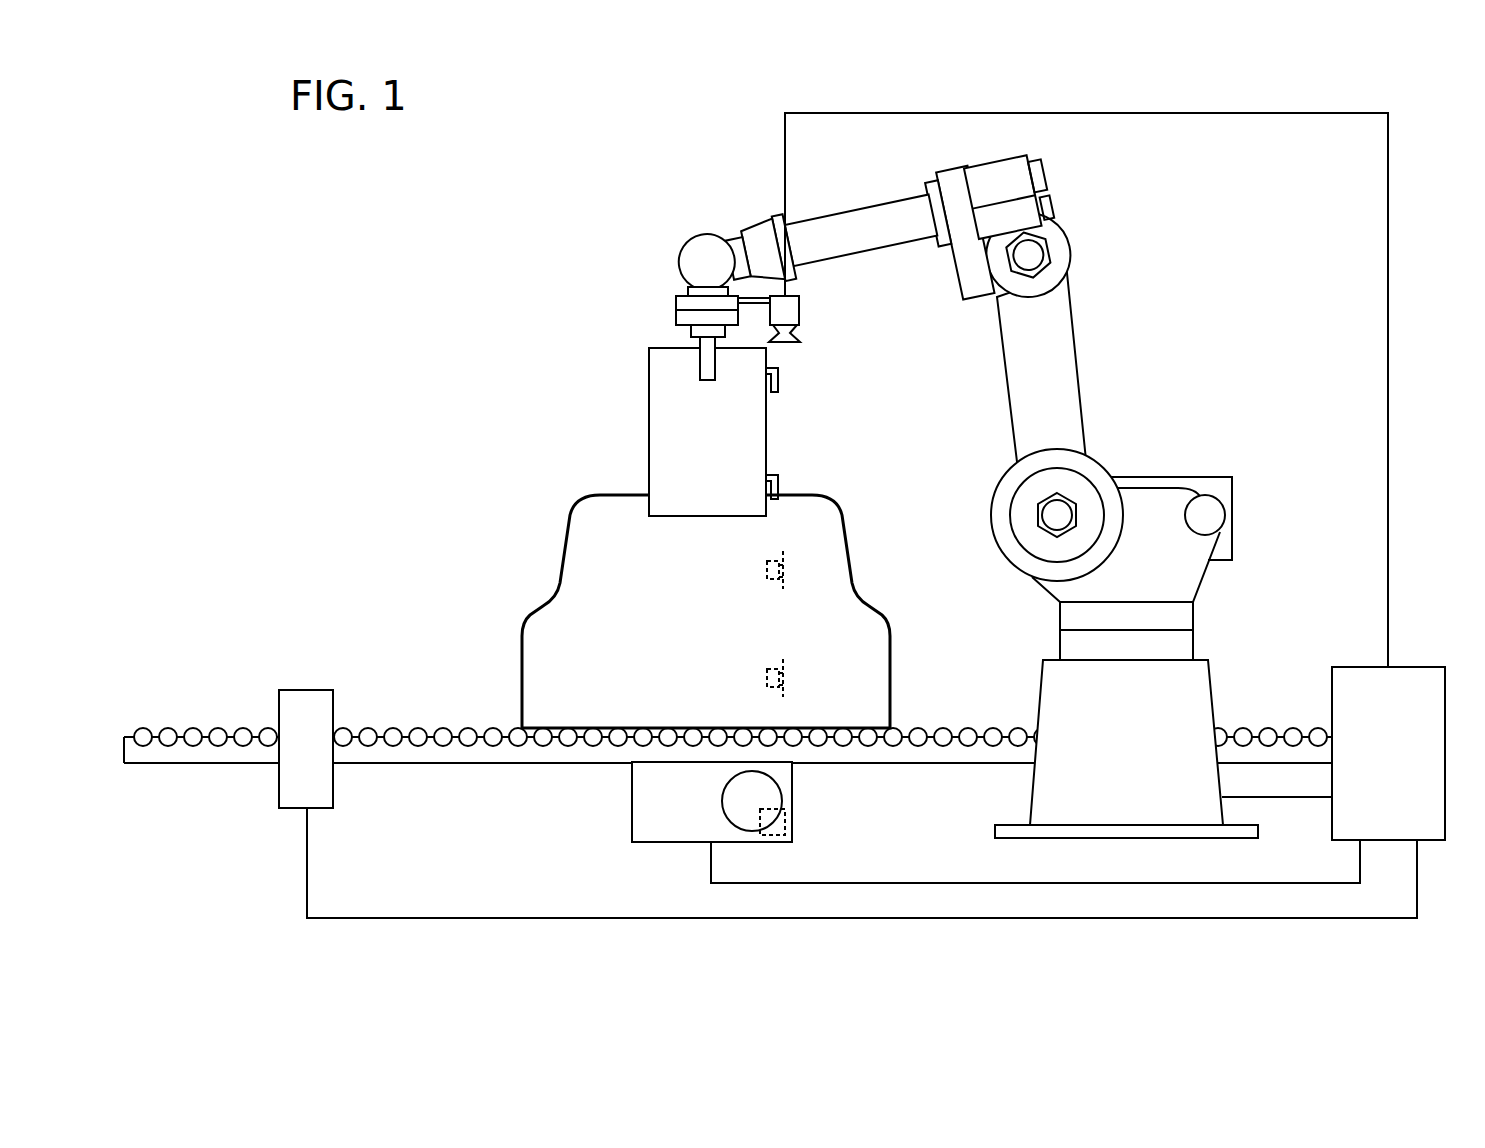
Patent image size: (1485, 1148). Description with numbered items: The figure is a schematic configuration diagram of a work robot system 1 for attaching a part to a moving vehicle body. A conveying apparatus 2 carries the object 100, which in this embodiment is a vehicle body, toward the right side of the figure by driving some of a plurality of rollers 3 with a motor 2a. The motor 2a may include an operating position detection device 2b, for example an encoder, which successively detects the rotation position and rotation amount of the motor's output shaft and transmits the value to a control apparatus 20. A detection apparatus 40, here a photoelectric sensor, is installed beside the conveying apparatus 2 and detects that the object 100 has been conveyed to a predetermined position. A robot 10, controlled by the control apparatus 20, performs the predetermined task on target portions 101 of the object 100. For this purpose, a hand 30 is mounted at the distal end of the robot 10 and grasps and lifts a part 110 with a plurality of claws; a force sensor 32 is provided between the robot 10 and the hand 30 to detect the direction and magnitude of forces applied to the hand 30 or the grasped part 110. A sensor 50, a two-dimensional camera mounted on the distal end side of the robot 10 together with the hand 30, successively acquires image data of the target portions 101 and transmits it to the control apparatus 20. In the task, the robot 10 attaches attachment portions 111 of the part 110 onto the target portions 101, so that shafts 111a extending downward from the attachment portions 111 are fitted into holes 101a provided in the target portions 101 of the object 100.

The work robot system 1 is at (606, 256).
The conveying apparatus 2 is at (160, 766).
The motor 2a is at (632, 802).
The operating position detection device 2b is at (786, 822).
The rollers 3 is at (143, 727).
The robot 10 is at (1120, 286).
The control apparatus 20 is at (1416, 667).
The hand 30 is at (691, 330).
The force sensor 32 is at (676, 313).
The detection apparatus 40 is at (307, 690).
The sensor 50 is at (800, 305).
The object 100 is at (548, 606).
The target portions 101 is at (786, 566).
The holes 101a is at (767, 570).
The part 110 is at (649, 432).
The attachment portions 111 is at (780, 372).
The shafts 111a is at (780, 384).